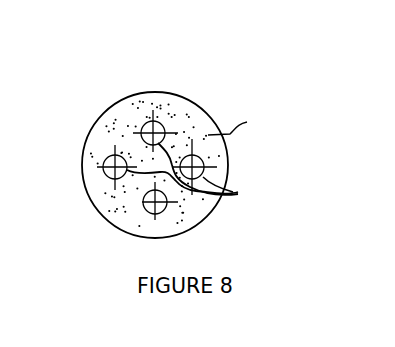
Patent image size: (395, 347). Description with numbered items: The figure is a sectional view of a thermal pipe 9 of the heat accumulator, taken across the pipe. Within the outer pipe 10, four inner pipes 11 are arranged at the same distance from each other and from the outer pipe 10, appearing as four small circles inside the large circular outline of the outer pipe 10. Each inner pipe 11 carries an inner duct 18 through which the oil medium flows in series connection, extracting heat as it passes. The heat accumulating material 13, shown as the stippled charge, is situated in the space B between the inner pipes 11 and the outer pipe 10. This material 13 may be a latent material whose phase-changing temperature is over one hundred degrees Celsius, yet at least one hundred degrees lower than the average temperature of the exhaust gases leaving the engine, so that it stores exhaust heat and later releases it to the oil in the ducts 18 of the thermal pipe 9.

The thermal pipe 9 is at (163, 74).
The space B is at (173, 121).
The outer pipe 10 is at (208, 112).
The heat accumulating material 13 is at (242, 118).
The inner duct 18 is at (156, 214).
The inner pipe 11 is at (197, 173).